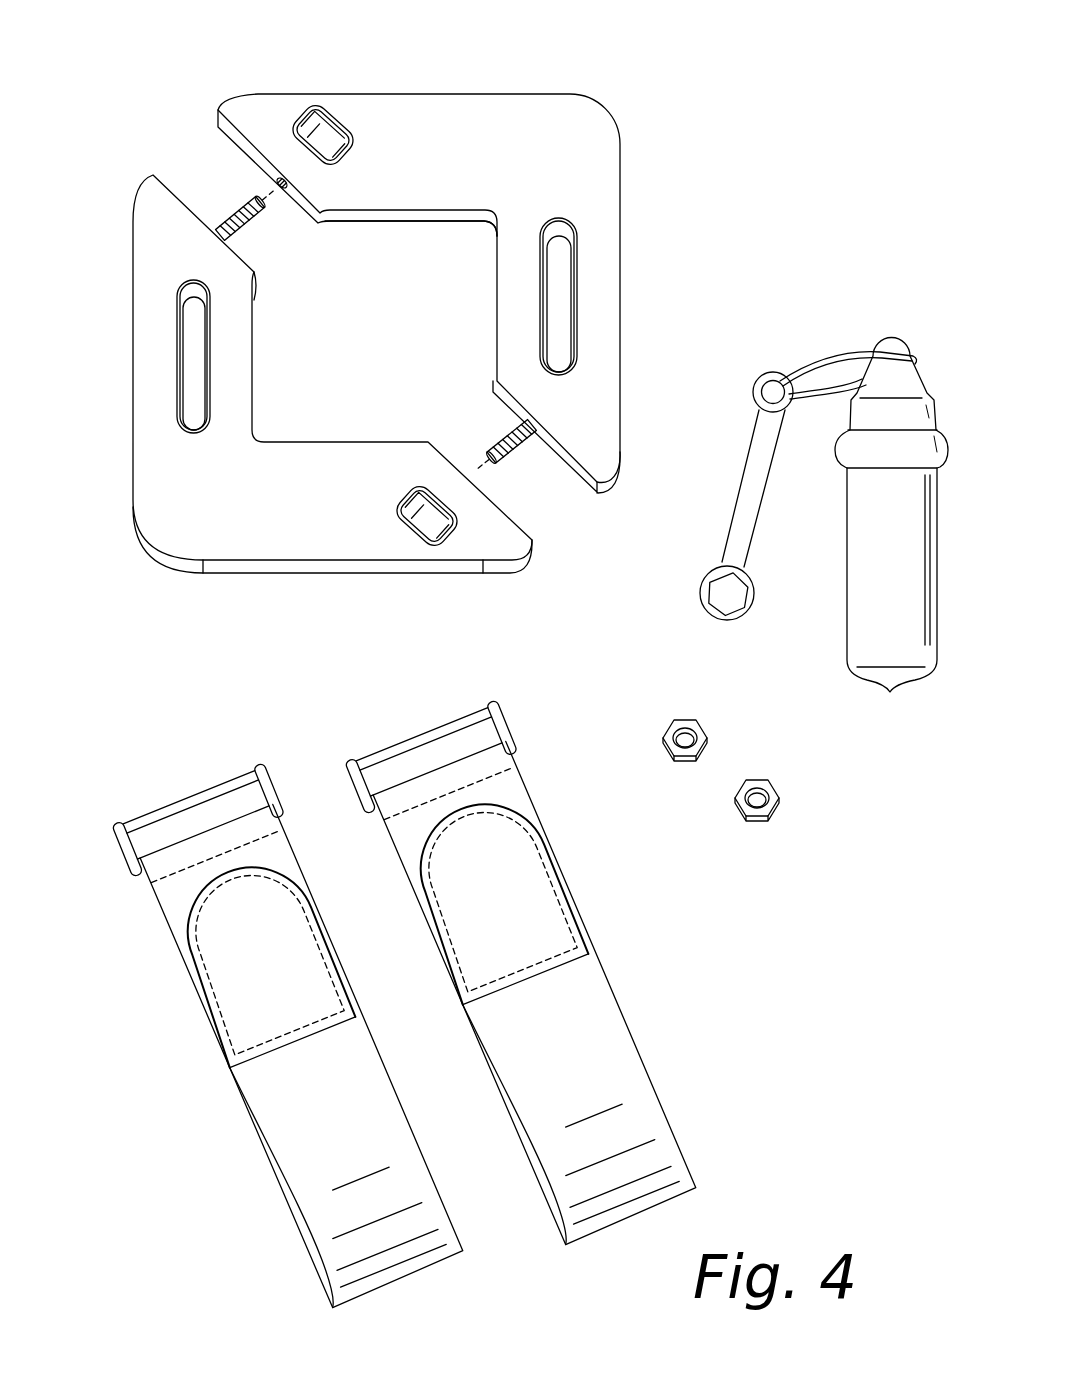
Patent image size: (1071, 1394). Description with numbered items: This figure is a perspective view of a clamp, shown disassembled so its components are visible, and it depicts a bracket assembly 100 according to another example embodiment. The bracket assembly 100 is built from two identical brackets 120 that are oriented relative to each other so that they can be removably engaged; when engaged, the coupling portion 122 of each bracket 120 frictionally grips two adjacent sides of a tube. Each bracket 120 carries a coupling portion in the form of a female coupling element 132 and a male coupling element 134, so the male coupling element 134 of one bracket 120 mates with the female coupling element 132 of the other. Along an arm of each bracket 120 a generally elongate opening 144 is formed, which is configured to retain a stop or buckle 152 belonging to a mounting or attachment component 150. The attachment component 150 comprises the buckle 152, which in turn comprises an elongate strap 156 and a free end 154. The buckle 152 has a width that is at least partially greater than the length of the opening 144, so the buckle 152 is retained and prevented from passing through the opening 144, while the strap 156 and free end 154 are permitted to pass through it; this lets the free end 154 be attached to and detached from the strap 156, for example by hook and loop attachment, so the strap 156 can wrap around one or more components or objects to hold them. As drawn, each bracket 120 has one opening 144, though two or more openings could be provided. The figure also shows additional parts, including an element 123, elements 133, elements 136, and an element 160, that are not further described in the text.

The bracket assembly 100 is at (416, 318).
The bracket 120 is at (375, 333).
The coupling portion 122 is at (323, 407).
The notch edge 123 is at (396, 216).
The female coupling element 132 is at (282, 195).
The aperture 133 is at (318, 150).
The male coupling element 134 is at (518, 455).
The nut 136 is at (740, 818).
The elongate opening 144 is at (568, 312).
The attachment component 150 is at (382, 966).
The buckle 152 is at (435, 733).
The free end 154 is at (259, 958).
The elongate strap 156 is at (200, 825).
The tool and sealant tube 160 is at (801, 592).